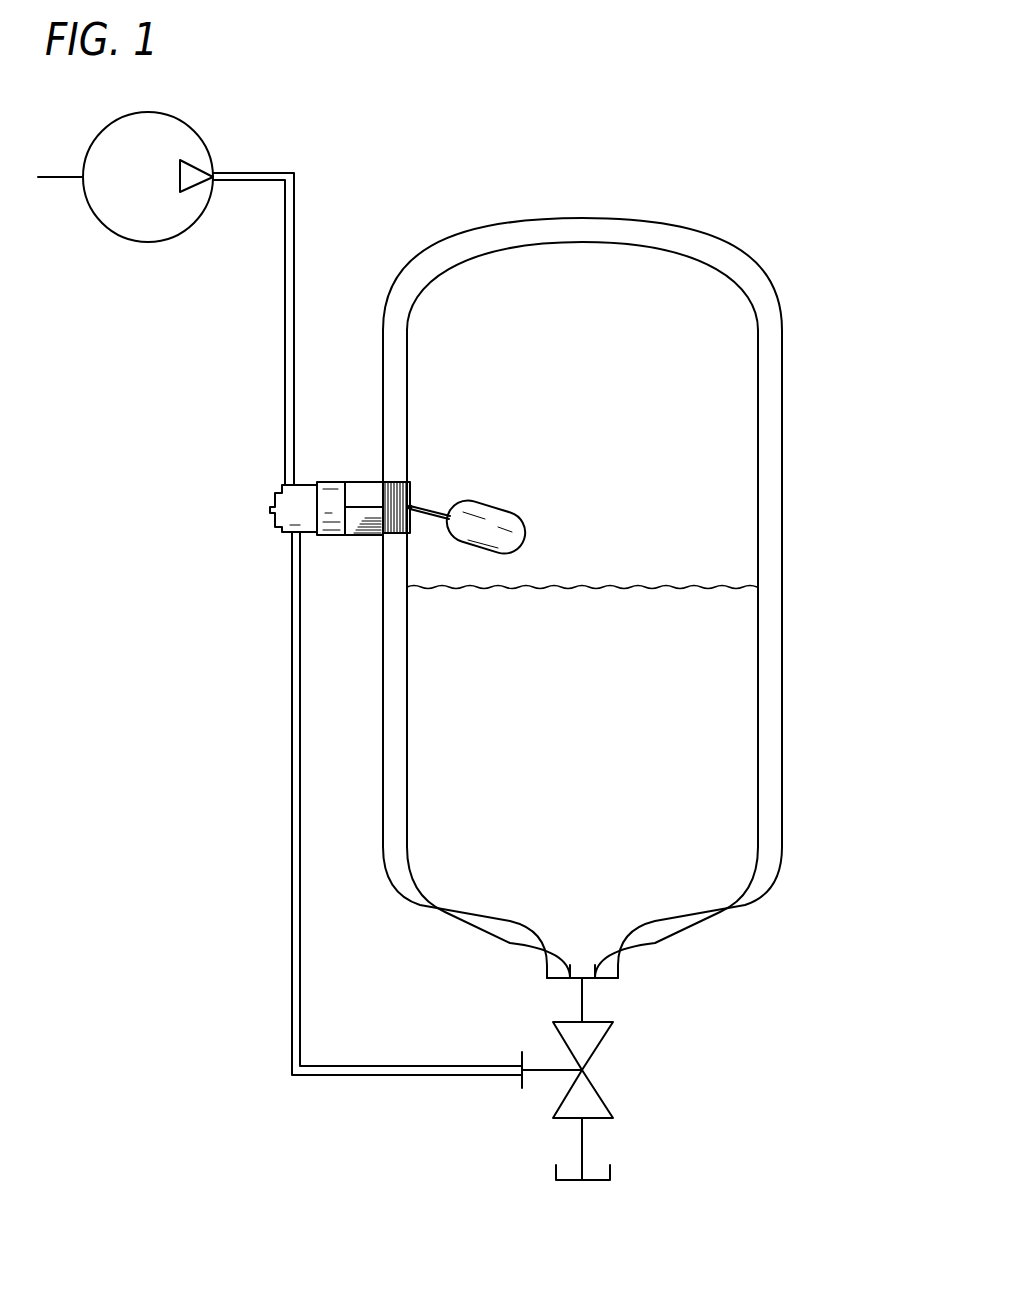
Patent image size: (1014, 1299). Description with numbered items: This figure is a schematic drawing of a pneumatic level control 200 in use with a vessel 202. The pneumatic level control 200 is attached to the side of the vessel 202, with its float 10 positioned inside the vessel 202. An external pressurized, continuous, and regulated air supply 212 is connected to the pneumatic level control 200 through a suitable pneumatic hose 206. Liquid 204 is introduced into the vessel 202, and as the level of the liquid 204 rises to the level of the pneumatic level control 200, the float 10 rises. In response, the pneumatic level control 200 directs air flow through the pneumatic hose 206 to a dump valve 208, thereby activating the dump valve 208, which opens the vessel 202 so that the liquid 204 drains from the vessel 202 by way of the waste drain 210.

The float 10 is at (500, 507).
The pneumatic level control 200 is at (325, 483).
The vessel 202 is at (770, 407).
The liquid 204 is at (615, 735).
The pneumatic hose 206 is at (285, 343).
The dump valve 208 is at (547, 1072).
The waste drain 210 is at (585, 946).
The air supply 212 is at (197, 128).